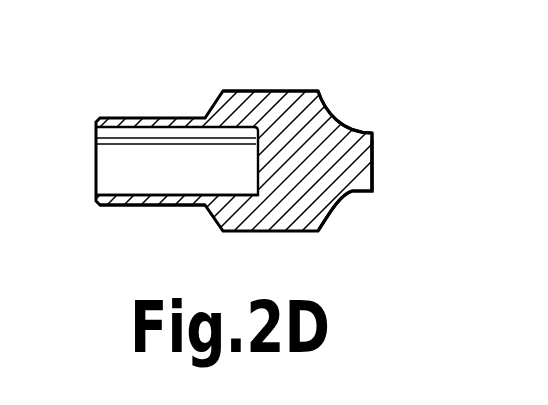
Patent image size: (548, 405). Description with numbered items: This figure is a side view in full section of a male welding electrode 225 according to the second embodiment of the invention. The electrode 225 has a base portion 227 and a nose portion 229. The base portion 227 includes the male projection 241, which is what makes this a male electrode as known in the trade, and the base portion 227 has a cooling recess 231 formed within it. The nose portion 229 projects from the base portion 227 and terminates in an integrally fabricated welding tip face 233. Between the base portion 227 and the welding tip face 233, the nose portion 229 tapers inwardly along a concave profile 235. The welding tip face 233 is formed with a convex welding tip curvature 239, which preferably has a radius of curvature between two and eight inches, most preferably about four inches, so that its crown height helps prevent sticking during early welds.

The electrode 225 is at (228, 72).
The base portion 227 is at (292, 102).
The nose portion 229 is at (346, 191).
The cooling recess 231 is at (108, 155).
The welding tip face 233 is at (375, 145).
The concave profile 235 is at (341, 121).
The convex welding tip curvature 239 is at (384, 177).
The male projection 241 is at (172, 197).